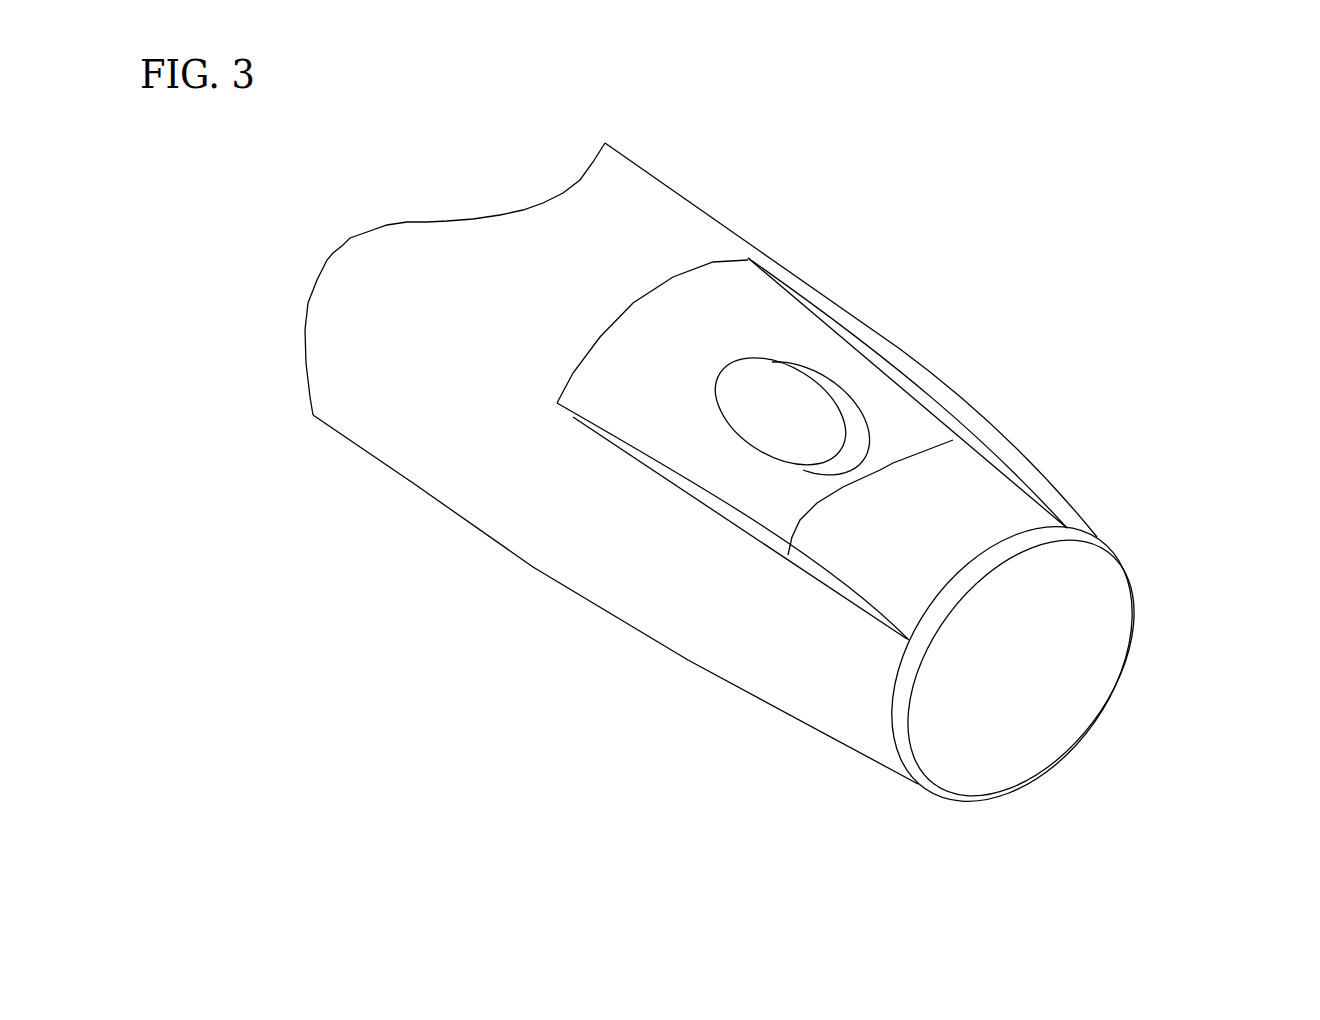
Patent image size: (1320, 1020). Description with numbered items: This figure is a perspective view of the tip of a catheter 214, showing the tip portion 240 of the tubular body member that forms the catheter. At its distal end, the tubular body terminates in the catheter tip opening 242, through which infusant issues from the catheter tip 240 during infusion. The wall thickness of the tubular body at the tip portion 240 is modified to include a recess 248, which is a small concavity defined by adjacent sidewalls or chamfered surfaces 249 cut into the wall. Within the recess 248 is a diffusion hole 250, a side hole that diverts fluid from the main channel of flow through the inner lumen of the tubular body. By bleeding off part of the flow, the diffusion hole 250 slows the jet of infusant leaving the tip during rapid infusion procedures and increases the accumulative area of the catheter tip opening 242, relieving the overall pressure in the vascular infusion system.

The catheter 214 is at (1070, 250).
The tip portion 240 is at (690, 202).
The catheter tip opening 242 is at (1130, 633).
The recess 248 is at (983, 494).
The chamfered surfaces 249 is at (953, 440).
The diffusion hole 250 is at (821, 390).